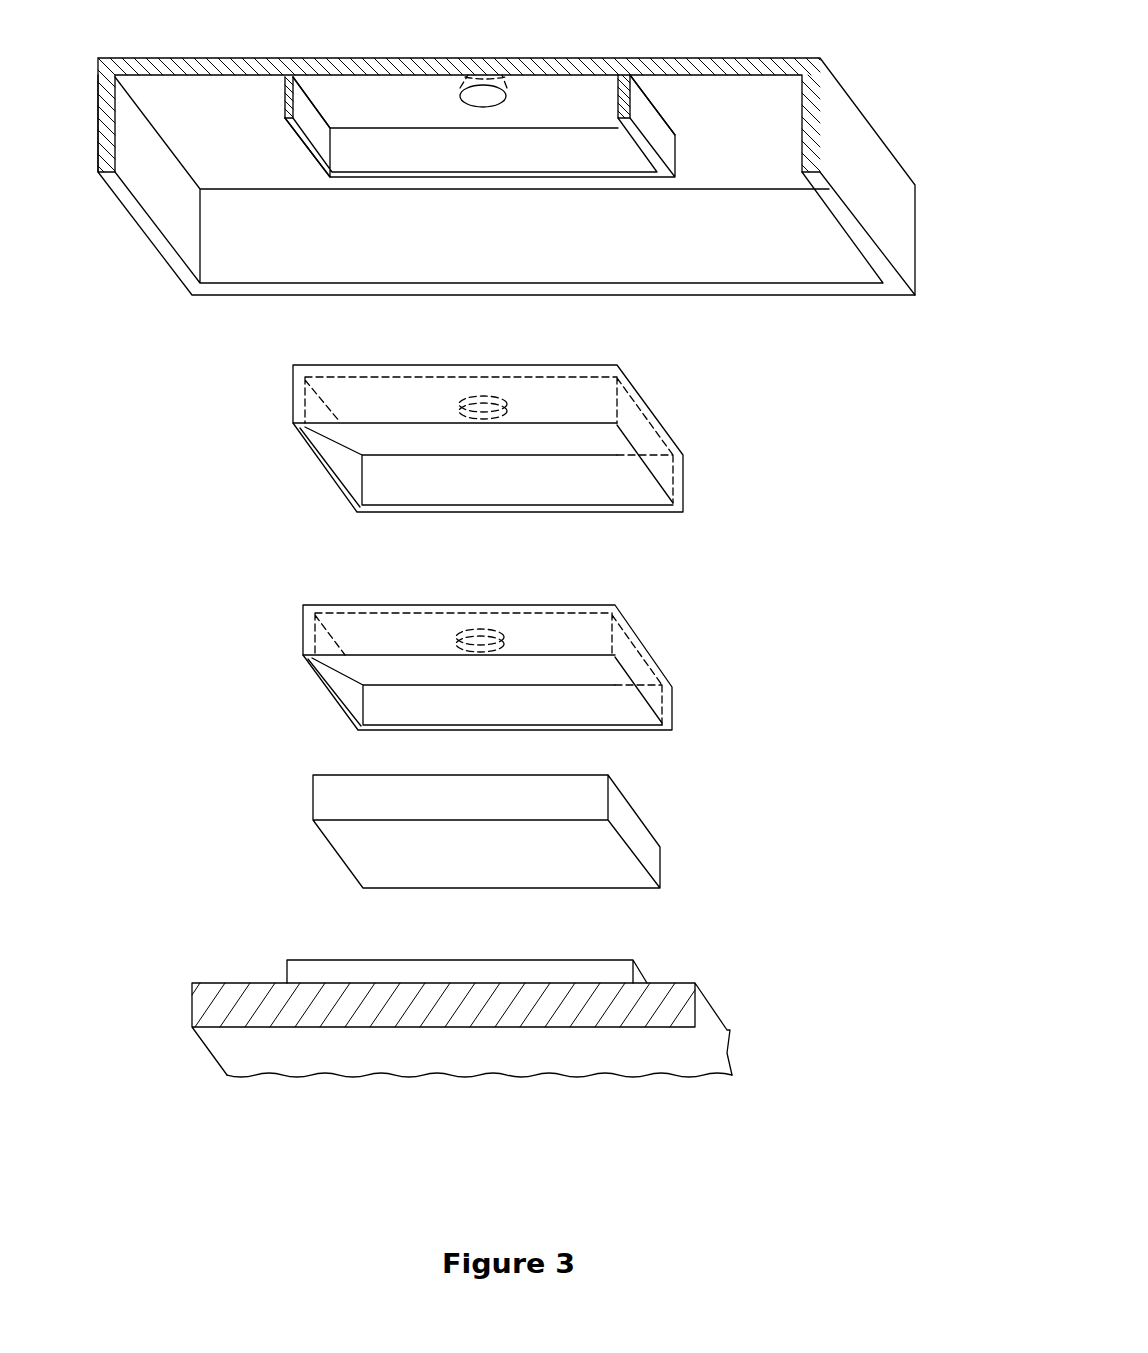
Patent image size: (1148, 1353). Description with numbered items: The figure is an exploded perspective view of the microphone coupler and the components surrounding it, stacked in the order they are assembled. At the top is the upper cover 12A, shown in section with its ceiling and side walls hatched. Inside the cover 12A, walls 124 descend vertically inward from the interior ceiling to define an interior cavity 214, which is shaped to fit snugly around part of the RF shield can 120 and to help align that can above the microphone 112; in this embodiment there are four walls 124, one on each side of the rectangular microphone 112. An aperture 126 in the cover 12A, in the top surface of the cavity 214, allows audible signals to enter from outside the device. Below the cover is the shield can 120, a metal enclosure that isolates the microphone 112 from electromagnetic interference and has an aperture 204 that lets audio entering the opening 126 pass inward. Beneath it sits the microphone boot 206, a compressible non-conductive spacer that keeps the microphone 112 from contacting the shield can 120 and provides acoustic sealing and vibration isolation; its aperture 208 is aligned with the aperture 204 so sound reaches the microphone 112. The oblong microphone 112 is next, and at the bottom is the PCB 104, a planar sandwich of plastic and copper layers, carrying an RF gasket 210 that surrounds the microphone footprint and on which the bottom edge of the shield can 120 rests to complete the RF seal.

The upper cover 12A is at (506, 184).
The interior cavity 214 is at (555, 145).
The walls 124 is at (303, 149).
The aperture 126 is at (460, 90).
The RF shield can 120 is at (584, 421).
The aperture 204 is at (480, 397).
The microphone boot 206 is at (570, 648).
The aperture 208 is at (483, 630).
The microphone 112 is at (650, 845).
The PCB 104 is at (474, 1040).
The RF gasket 210 is at (642, 978).